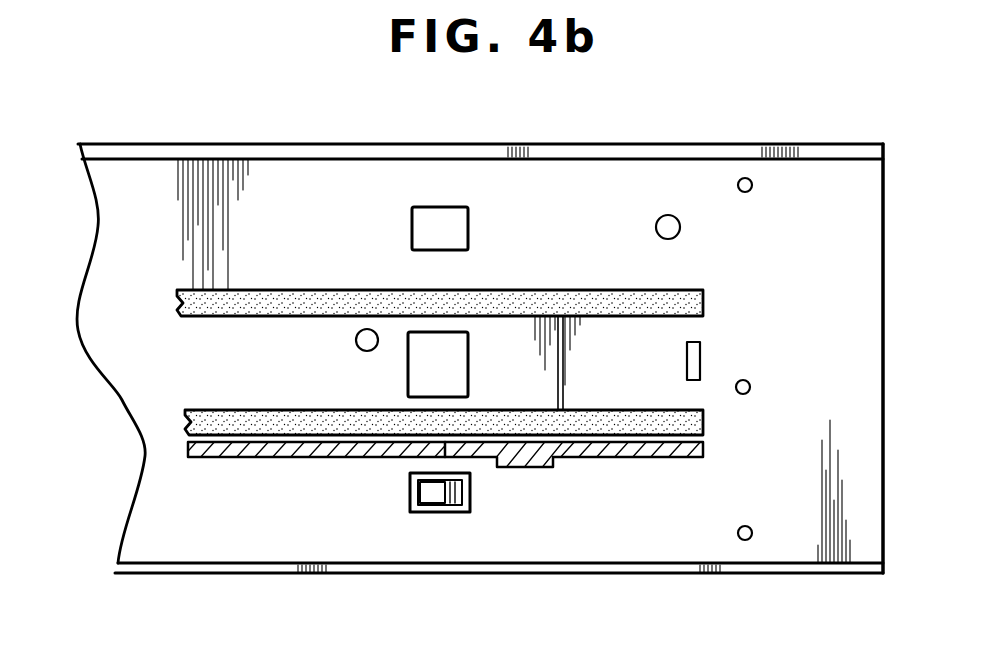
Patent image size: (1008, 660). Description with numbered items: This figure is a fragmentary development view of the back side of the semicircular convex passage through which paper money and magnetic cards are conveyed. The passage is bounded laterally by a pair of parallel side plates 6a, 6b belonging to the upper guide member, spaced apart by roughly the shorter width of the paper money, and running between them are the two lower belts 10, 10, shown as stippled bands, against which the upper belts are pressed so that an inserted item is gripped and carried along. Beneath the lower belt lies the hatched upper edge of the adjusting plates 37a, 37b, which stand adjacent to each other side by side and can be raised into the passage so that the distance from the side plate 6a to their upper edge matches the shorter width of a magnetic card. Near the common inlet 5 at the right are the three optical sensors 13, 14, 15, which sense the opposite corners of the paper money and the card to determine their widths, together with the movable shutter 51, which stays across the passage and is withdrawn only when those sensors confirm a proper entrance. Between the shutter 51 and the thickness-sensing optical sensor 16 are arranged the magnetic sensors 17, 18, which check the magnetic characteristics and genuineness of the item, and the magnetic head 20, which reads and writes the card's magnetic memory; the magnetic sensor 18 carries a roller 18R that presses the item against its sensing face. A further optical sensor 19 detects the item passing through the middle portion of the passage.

The common inlet 5 is at (855, 311).
The side plate 6a is at (313, 153).
The side plate 6b is at (350, 575).
The lower belt 10 is at (268, 300).
The sensor 13 is at (752, 183).
The sensor 14 is at (750, 390).
The sensor 15 is at (752, 530).
The optical sensor 16 is at (657, 231).
The magnetic sensor 17 is at (468, 228).
The magnetic sensor 18 is at (470, 490).
The roller 18R is at (446, 490).
The optical sensor 19 is at (358, 348).
The magnetic head 20 is at (468, 360).
The adjusting plate 37a is at (628, 458).
The adjusting plate 37b is at (228, 458).
The movable shutter 51 is at (697, 352).